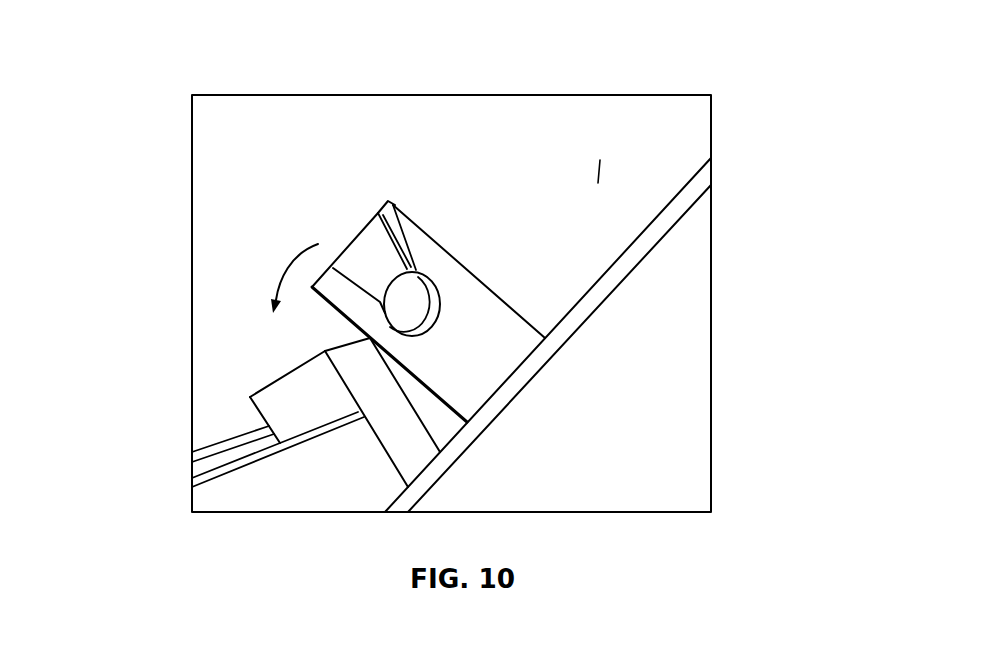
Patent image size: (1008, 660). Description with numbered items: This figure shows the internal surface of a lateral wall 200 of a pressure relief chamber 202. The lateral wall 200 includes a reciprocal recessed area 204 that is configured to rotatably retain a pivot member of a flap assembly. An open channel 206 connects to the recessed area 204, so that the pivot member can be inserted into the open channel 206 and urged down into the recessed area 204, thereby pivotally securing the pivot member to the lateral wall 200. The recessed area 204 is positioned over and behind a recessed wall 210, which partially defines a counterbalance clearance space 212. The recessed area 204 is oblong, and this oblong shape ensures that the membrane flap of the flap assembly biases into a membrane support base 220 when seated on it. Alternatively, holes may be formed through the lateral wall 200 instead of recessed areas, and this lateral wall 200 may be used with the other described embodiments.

The lateral wall 200 is at (510, 130).
The pressure relief chamber 202 is at (220, 165).
The reciprocal recessed area 204 is at (418, 305).
The open channel 206 is at (363, 257).
The recessed wall 210 is at (420, 381).
The counterbalance clearance space 212 is at (600, 160).
The membrane support base 220 is at (226, 441).